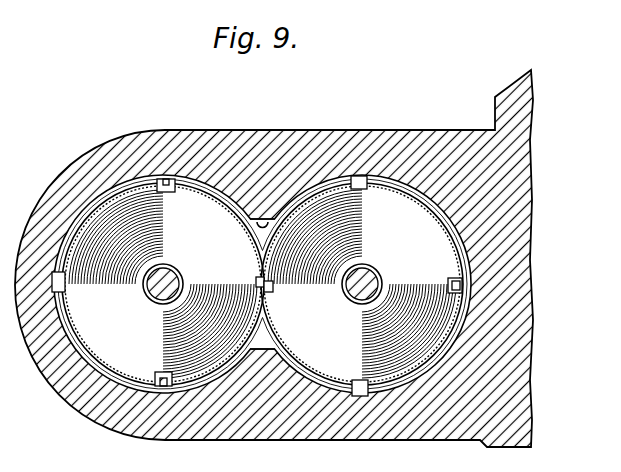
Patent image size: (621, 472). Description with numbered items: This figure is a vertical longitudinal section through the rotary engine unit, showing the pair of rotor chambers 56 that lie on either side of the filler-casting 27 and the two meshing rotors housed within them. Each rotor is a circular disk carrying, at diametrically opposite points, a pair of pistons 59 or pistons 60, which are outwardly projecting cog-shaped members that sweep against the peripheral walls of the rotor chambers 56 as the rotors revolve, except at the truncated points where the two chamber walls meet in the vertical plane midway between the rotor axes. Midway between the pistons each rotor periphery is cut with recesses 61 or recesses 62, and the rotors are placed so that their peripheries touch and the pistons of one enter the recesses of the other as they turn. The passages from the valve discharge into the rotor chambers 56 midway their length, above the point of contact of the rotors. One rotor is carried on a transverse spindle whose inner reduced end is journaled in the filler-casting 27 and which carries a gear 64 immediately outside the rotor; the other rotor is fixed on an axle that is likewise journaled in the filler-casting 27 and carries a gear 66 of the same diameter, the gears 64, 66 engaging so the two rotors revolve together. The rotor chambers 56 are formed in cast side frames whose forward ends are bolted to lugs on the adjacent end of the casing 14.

The filler-casting 27 is at (428, 442).
The rotor-chambers 56 is at (255, 221).
The piston 59 is at (362, 190).
The piston 60 is at (66, 284).
The recess 61 is at (274, 291).
The recess 62 is at (173, 192).
The gear 64 is at (462, 286).
The gear 66 is at (165, 388).
The casing 14 is at (46, 466).